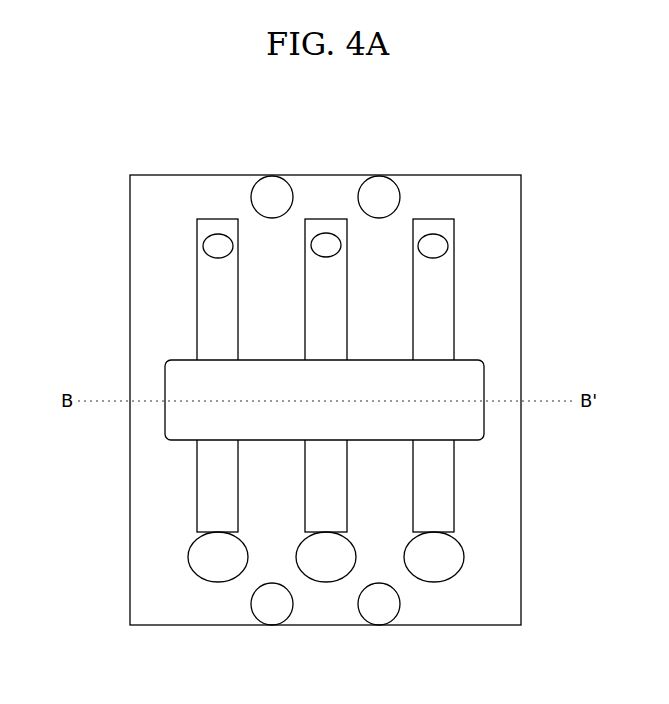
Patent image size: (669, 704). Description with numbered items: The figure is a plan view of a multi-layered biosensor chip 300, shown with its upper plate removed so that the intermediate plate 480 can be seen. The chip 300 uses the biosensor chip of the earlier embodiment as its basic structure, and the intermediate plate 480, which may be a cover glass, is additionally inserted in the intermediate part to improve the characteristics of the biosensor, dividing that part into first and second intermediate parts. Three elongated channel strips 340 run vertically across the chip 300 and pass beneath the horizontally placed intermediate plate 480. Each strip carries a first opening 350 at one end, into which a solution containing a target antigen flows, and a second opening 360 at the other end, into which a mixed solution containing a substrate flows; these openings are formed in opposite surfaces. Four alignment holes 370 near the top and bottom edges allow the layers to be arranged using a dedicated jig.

The multi-layered biosensor chip 300 is at (347, 684).
The conductive lines / pillars 340 is at (442, 281).
The first opening 350 is at (455, 555).
The second opening 360 is at (443, 243).
The alignment holes 370 is at (271, 190).
The intermediate plate 480 is at (474, 425).